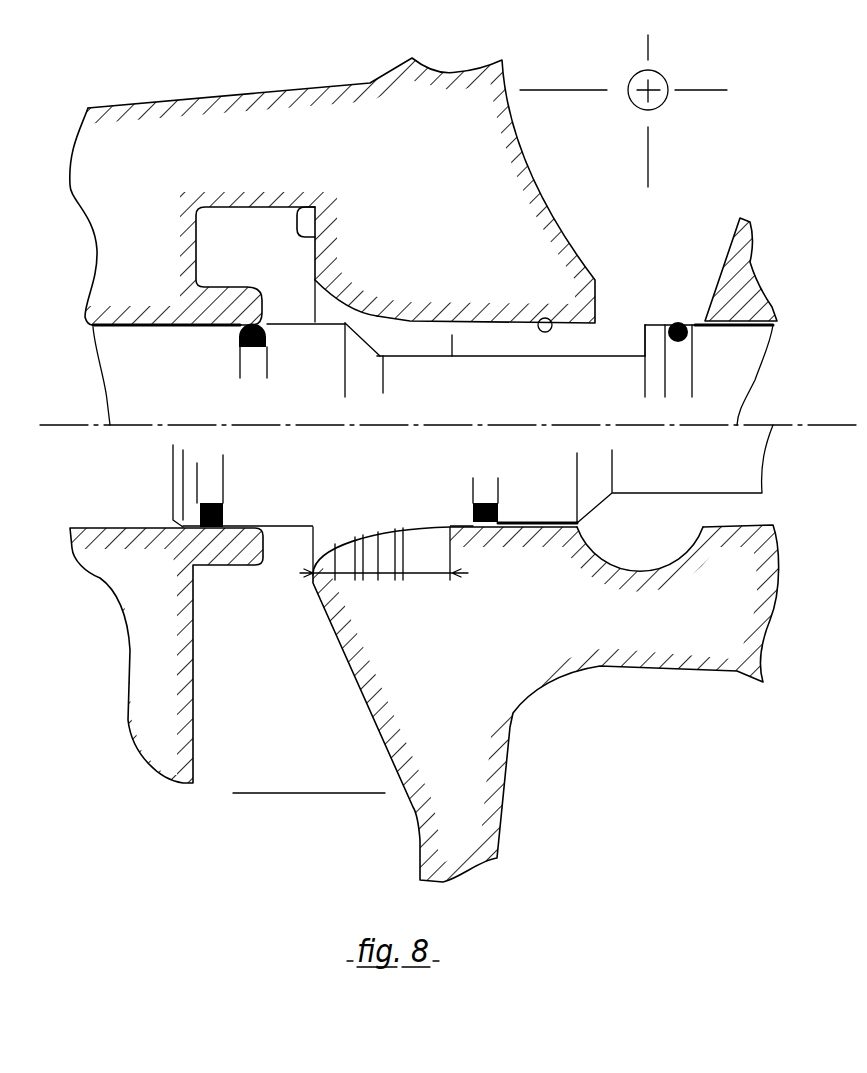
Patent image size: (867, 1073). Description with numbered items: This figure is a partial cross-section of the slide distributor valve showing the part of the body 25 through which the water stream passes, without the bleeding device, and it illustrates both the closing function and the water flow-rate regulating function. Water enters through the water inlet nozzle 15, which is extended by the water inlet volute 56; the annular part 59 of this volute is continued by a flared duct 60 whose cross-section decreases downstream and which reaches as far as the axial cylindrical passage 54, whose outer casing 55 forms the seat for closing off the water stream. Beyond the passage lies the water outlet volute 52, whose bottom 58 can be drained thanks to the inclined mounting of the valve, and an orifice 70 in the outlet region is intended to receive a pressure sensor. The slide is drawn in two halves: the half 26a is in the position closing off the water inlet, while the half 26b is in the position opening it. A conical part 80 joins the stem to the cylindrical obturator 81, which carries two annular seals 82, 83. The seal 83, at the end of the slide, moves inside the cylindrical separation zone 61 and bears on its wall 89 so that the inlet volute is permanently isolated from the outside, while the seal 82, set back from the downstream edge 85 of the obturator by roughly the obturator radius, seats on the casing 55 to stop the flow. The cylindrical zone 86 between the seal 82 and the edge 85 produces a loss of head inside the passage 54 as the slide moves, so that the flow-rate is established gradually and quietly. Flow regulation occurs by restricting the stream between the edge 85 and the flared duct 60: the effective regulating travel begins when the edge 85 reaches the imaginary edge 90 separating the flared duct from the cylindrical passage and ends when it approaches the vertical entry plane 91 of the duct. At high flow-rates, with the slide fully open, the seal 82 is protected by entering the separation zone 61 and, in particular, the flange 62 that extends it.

The water inlet nozzle 15 is at (352, 844).
The body 25 is at (527, 706).
The slide half in closing position 26a is at (803, 477).
The slide half in opening position 26b is at (782, 406).
The water outlet volute 52 is at (693, 288).
The axial cylindrical passage 54 is at (526, 352).
The outer casing 55 is at (546, 318).
The water inlet volute 56 is at (296, 771).
The bottom of the water outlet volute 58 is at (624, 563).
The annular part 59 is at (262, 262).
The flared duct 60 is at (419, 352).
The cylindrical separation zone 61 is at (116, 485).
The flange 62 is at (236, 567).
The orifice 70 is at (660, 102).
The conical part 80 is at (372, 353).
The cylindrical obturator 81 is at (293, 528).
The annular seal 82 is at (238, 332).
The annular seal 83 is at (225, 518).
The downstream edge of the obturator 85 is at (350, 320).
The cylindrical zone 86 is at (301, 326).
The wall of the cylindrical separation zone 89 is at (88, 525).
The imaginary edge 90 is at (455, 335).
The vertical entry plane 91 is at (310, 199).